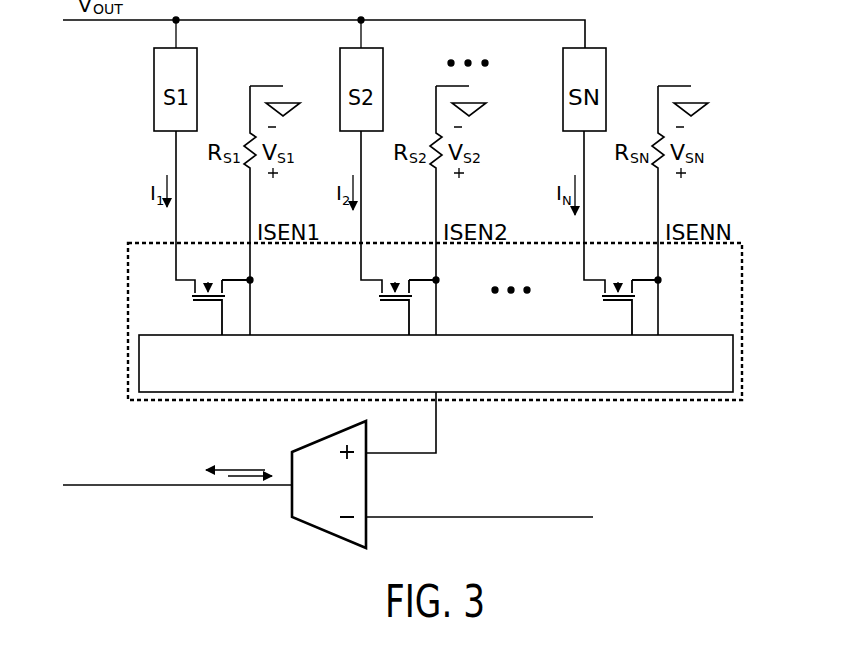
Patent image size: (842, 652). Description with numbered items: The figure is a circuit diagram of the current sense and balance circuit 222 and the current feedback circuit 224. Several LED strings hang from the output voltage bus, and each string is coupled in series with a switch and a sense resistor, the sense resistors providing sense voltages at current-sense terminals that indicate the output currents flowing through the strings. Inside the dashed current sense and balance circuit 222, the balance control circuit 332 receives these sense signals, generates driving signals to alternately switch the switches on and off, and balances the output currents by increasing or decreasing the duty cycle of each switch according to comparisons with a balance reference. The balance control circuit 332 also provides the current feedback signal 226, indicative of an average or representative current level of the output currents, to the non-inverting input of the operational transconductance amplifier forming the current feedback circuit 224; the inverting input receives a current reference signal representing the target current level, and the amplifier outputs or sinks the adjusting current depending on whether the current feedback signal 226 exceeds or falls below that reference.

The current sense and balance circuit 222 is at (474, 315).
The balance control circuit 332 is at (676, 335).
The current feedback signal 226 is at (437, 416).
The current feedback circuit 224 is at (308, 527).